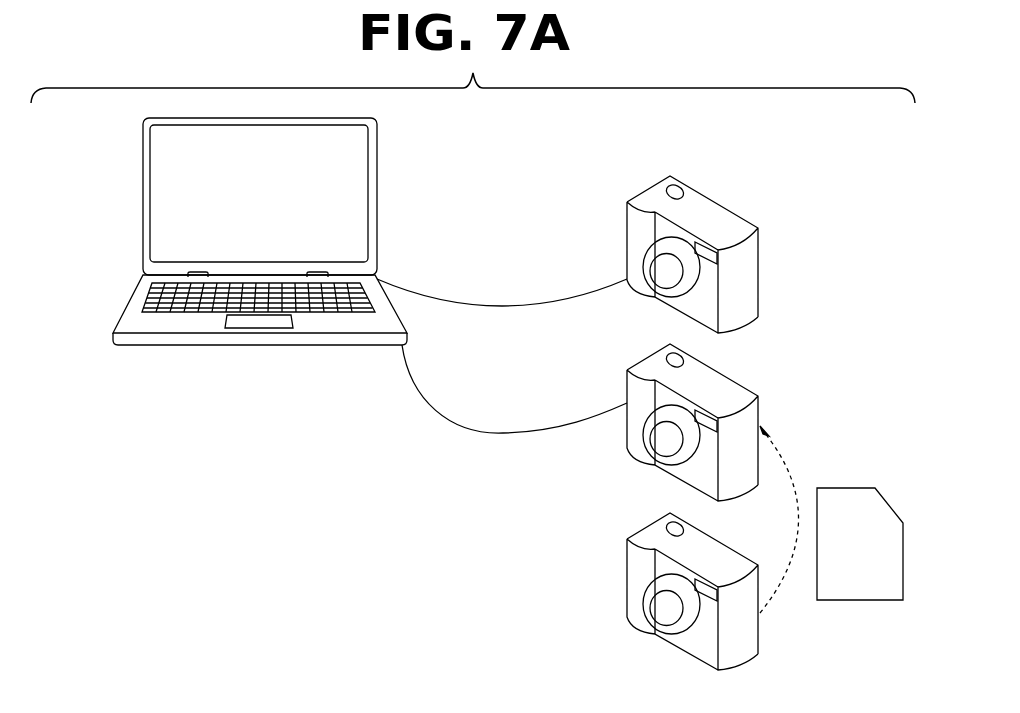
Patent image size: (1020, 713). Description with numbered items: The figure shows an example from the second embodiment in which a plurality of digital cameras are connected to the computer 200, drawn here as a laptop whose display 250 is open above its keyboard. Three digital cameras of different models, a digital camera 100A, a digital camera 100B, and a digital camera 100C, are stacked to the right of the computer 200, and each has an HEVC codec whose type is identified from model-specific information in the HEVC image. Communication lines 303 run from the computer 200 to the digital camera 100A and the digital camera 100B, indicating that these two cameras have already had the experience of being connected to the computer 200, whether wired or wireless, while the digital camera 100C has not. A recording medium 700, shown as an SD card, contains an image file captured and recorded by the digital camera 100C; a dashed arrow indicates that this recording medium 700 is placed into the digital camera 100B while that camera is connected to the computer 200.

The computer 200 is at (132, 298).
The display unit 250 is at (143, 170).
The wireless communication 303 is at (437, 303).
The digital camera 100A is at (627, 220).
The digital camera 100B is at (627, 385).
The digital camera 100C is at (627, 552).
The recording medium 700 is at (858, 488).